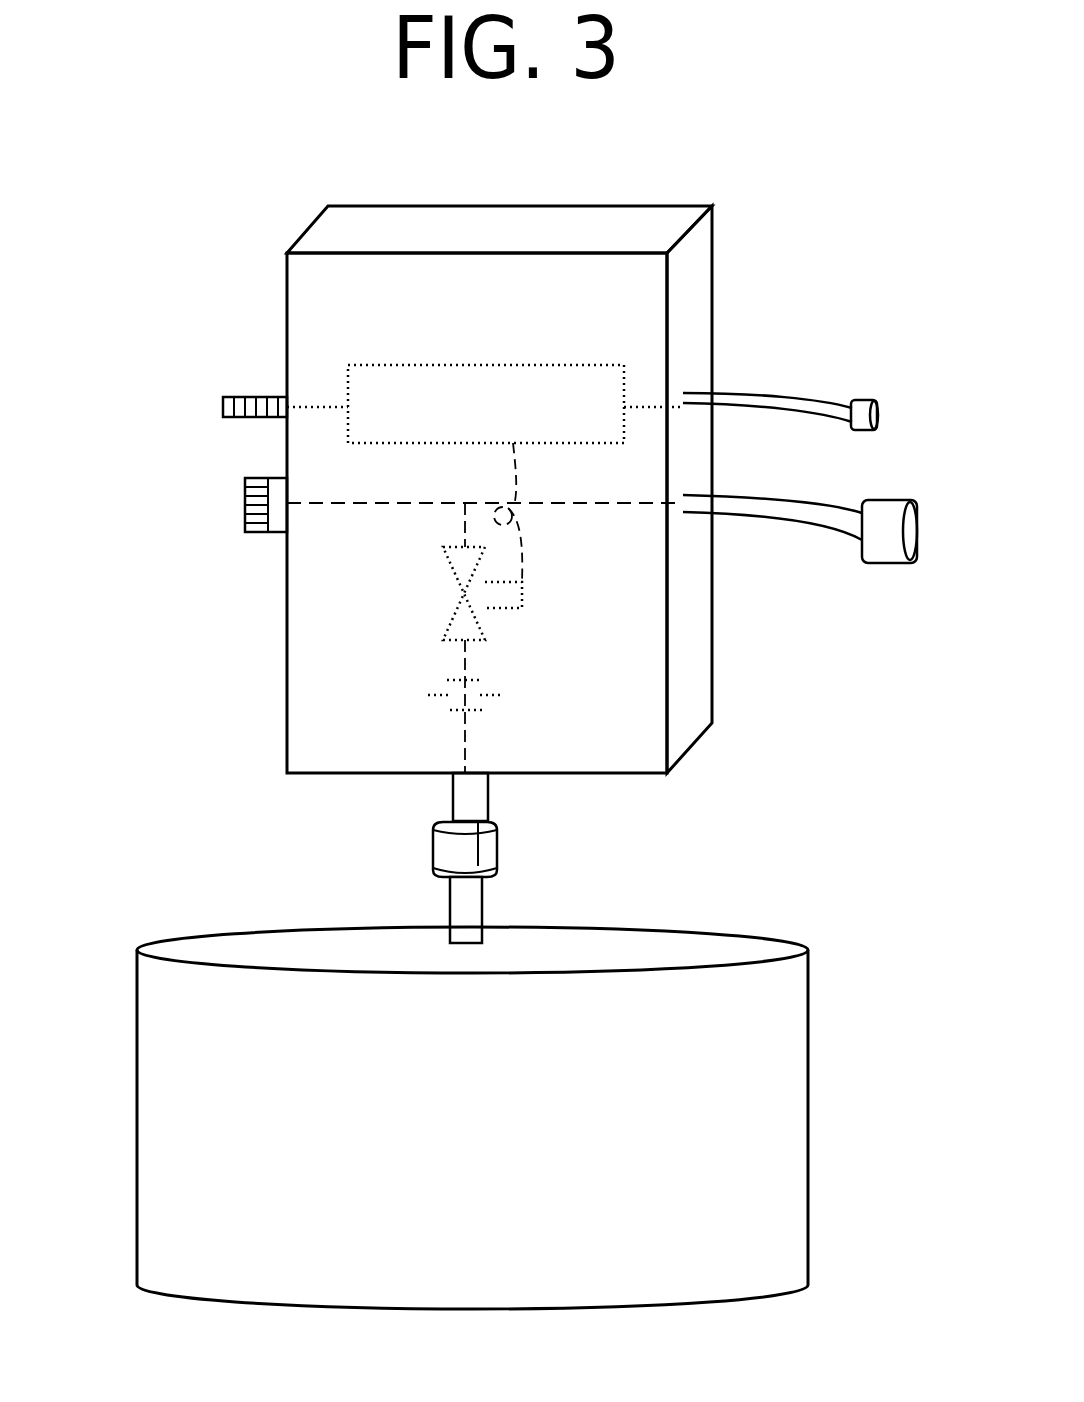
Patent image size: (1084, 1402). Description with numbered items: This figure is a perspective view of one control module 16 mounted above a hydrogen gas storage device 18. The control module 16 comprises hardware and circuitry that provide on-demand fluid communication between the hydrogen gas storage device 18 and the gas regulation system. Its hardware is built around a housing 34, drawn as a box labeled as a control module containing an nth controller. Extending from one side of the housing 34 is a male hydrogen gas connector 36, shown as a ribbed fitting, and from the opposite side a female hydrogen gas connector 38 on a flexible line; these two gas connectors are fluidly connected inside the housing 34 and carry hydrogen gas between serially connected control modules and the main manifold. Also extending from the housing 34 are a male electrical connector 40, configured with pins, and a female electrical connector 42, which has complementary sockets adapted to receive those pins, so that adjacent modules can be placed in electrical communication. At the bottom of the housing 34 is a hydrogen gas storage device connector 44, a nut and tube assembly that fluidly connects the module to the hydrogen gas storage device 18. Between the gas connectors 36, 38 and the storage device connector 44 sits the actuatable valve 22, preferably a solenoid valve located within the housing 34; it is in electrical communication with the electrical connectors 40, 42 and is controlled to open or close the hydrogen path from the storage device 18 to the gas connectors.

The control module 16 is at (272, 276).
The housing 34 is at (712, 295).
The male electrical connector 40 is at (238, 396).
The male hydrogen gas connector 36 is at (245, 478).
The female electrical connector 42 is at (810, 400).
The female hydrogen gas connector 38 is at (815, 503).
The actuatable valve 22 is at (452, 565).
The hydrogen gas storage device connector 44 is at (500, 857).
The hydrogen gas storage device 18 is at (808, 1180).